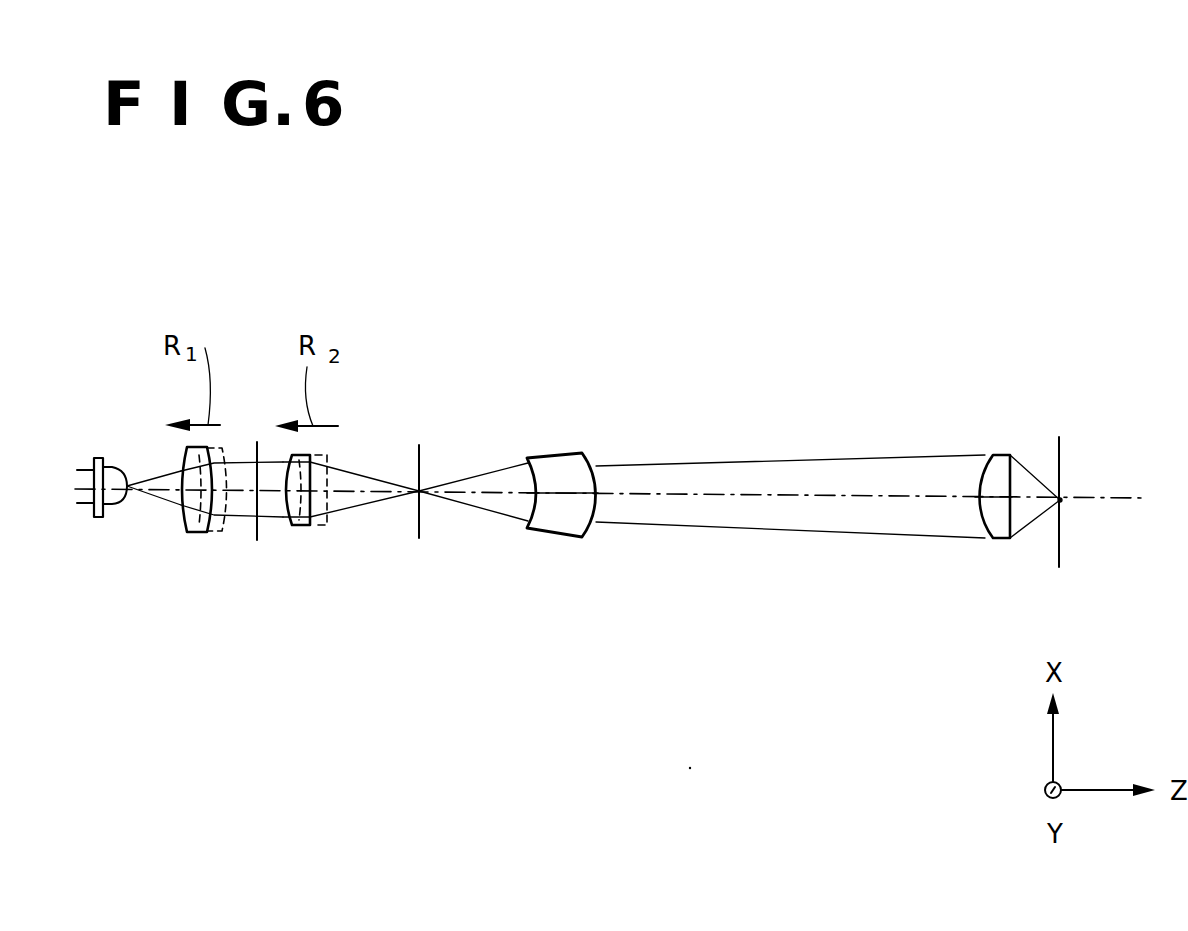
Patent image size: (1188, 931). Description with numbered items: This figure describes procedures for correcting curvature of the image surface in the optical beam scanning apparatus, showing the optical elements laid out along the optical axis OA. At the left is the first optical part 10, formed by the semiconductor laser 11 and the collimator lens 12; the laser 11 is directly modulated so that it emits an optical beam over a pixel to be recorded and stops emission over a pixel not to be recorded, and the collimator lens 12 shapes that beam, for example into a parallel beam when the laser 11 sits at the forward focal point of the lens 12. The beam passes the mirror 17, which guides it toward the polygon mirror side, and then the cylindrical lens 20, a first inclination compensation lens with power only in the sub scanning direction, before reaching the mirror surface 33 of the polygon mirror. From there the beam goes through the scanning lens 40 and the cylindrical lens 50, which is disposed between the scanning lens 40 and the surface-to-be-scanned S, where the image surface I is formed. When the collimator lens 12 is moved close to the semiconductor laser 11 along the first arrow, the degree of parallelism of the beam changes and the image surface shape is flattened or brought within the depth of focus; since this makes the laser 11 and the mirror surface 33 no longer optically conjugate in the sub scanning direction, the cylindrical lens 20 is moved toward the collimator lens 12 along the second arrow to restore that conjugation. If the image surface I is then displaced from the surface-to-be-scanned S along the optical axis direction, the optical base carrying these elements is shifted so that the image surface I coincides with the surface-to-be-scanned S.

The first optical part 10 is at (228, 625).
The semiconductor laser 11 is at (116, 500).
The collimator lens 12 is at (195, 530).
The mirror 17 is at (257, 534).
The cylindrical lens 20 is at (307, 526).
The mirror surface 33 is at (418, 527).
The scanning lens 40 is at (563, 515).
The cylindrical lens 50 is at (1002, 528).
The surface-to-be-scanned S is at (1057, 542).
The image surface I is at (1061, 501).
The optical axis OA is at (1093, 498).